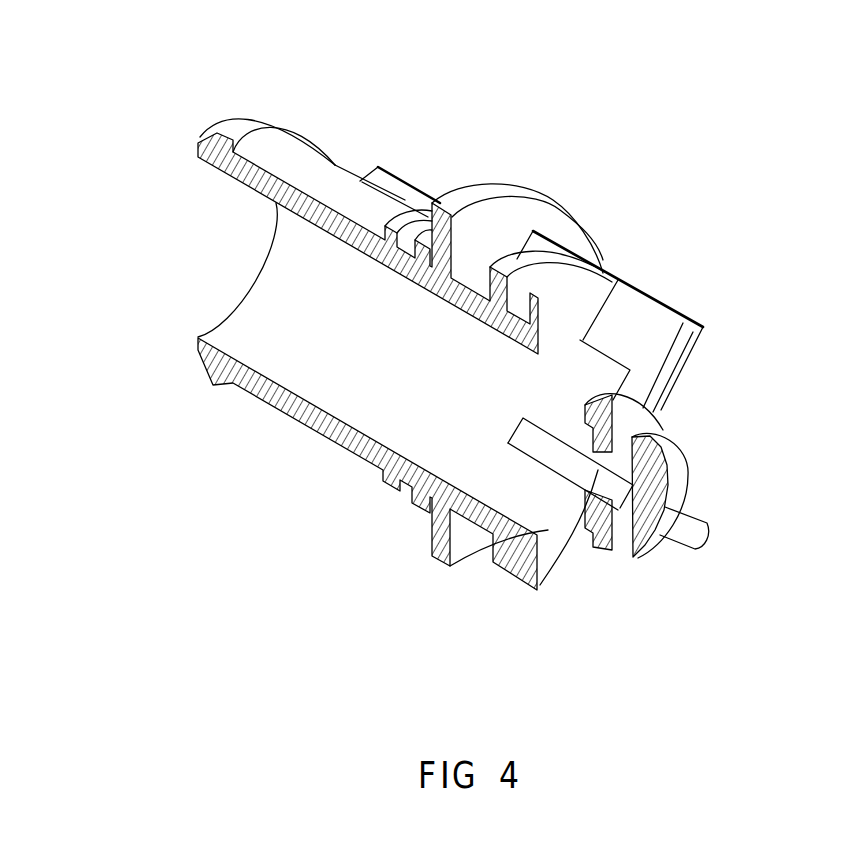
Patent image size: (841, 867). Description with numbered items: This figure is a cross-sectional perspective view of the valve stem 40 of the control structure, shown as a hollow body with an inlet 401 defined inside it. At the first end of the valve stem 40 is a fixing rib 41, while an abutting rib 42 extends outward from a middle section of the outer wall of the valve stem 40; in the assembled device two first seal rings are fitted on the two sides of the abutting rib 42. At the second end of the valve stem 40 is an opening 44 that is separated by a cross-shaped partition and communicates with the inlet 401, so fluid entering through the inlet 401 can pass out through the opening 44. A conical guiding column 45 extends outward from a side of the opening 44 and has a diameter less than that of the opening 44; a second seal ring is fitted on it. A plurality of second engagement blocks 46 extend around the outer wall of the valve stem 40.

The valve stem 40 is at (311, 433).
The inlet 401 is at (259, 331).
The fixing rib 41 is at (283, 135).
The abutting rib 42 is at (480, 197).
The opening 44 is at (587, 367).
The conical guiding column 45 is at (667, 475).
The second engagement blocks 46 is at (403, 190).